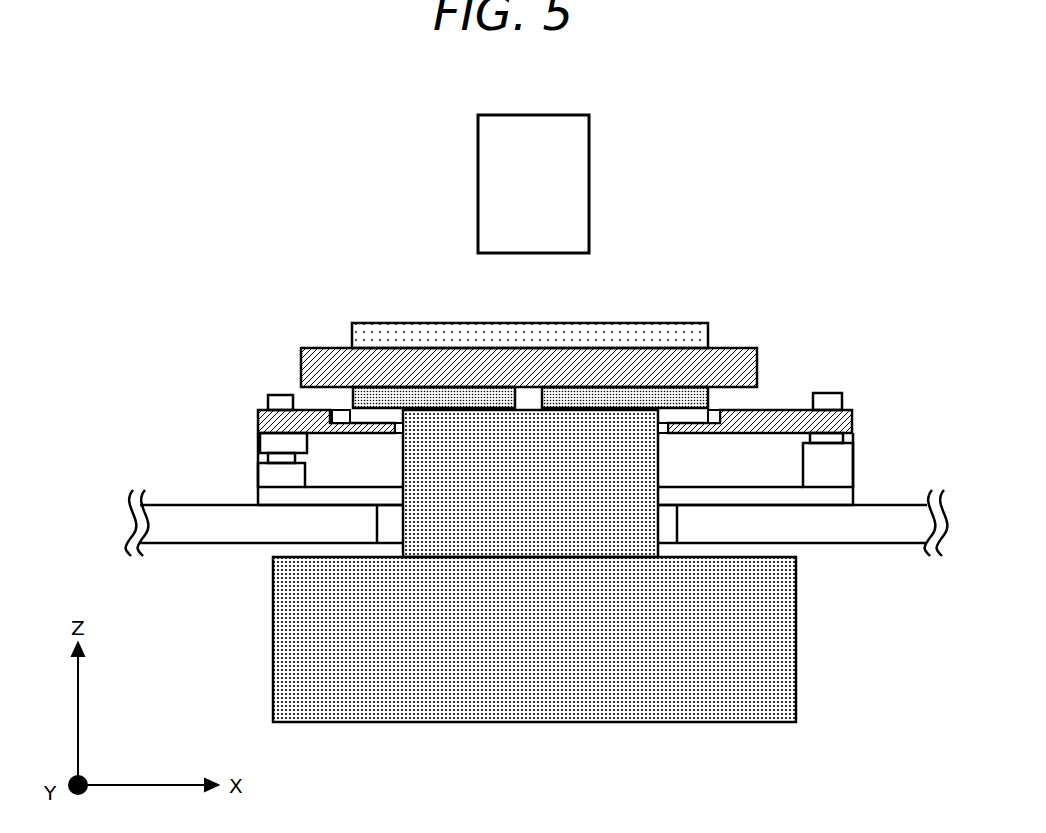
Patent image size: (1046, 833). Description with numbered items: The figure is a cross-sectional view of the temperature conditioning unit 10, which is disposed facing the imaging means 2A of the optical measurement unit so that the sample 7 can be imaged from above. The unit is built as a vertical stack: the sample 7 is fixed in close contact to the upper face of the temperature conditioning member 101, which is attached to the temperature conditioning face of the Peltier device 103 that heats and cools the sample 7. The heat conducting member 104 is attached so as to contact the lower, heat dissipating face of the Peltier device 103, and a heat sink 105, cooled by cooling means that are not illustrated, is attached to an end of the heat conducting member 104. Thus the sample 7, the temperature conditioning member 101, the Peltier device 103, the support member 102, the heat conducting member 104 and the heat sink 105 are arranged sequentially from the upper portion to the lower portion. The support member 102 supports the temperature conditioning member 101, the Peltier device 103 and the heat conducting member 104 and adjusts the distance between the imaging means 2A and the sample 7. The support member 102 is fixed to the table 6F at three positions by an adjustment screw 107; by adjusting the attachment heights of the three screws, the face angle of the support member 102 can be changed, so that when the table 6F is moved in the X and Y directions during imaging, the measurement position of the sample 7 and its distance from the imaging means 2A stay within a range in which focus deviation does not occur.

The imaging means 2A is at (580, 175).
The temperature conditioning unit 10 is at (387, 300).
The sample 7 is at (533, 330).
The temperature conditioning member 101 is at (325, 355).
The Peltier device 103 is at (428, 398).
The heat conducting member 104 is at (625, 483).
The heat sink 105 is at (597, 713).
The support member 102 is at (272, 422).
The adjustment screw 107 is at (281, 395).
The table 6F is at (212, 543).